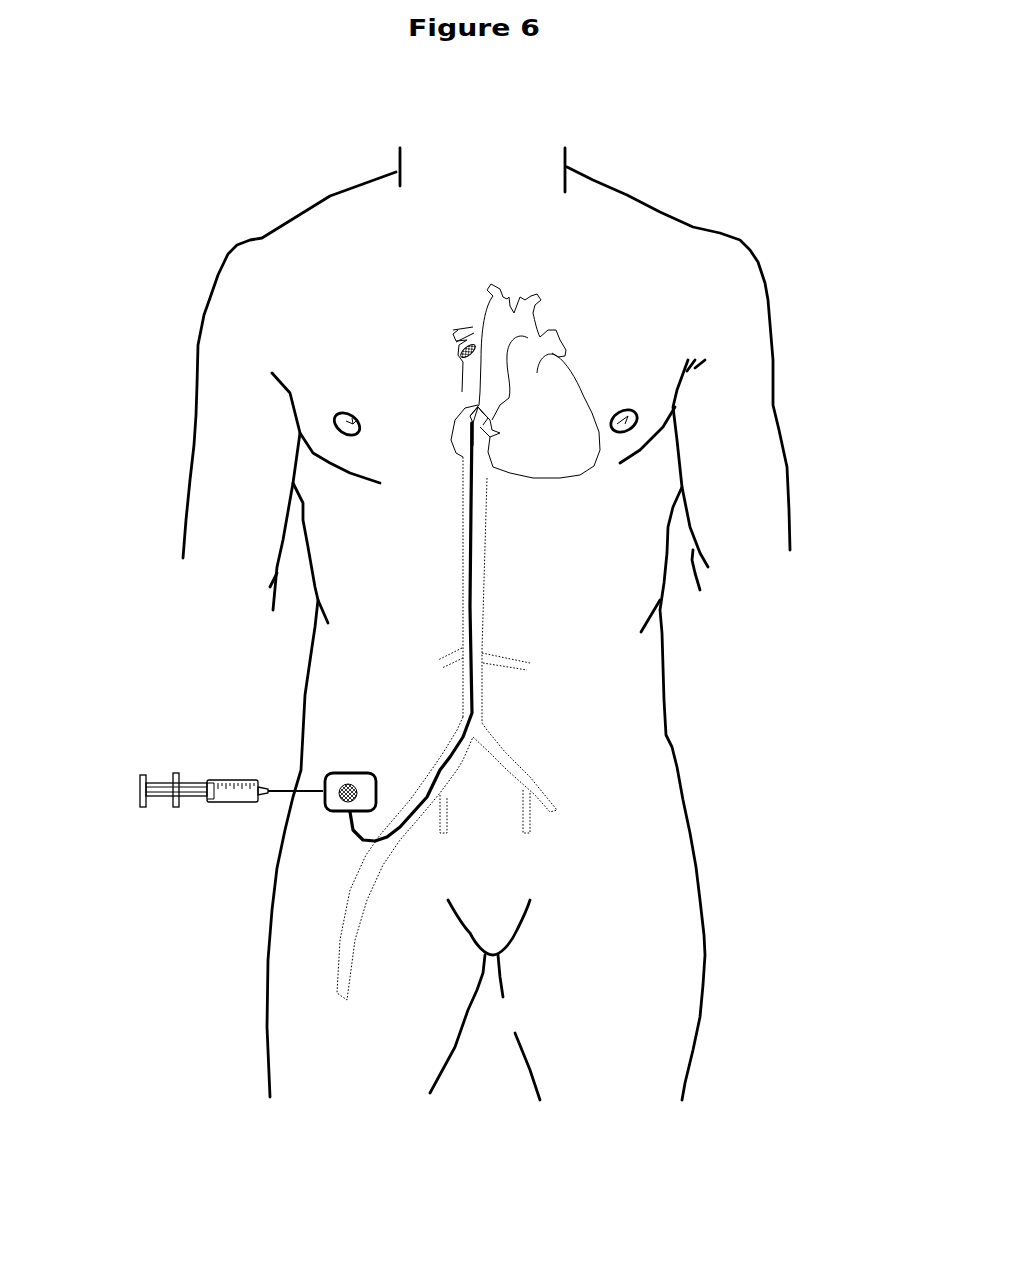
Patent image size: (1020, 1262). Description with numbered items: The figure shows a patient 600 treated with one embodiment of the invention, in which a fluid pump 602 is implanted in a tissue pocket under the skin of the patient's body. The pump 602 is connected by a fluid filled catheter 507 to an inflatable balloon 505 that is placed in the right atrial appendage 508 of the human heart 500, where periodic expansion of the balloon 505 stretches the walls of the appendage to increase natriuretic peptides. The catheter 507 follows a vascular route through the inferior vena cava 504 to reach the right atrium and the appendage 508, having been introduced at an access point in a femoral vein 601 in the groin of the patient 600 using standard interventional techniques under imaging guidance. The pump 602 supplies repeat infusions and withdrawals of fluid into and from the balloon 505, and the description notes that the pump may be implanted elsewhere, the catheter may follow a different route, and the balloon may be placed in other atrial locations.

The patient 600 is at (591, 288).
The human heart 500 is at (560, 441).
The inferior vena cava 504 is at (463, 493).
The inflatable balloon 505 is at (480, 423).
The catheter 507 is at (478, 528).
The right atrial appendage 508 is at (470, 413).
The femoral vein 601 is at (357, 932).
The fluid pump 602 is at (346, 773).